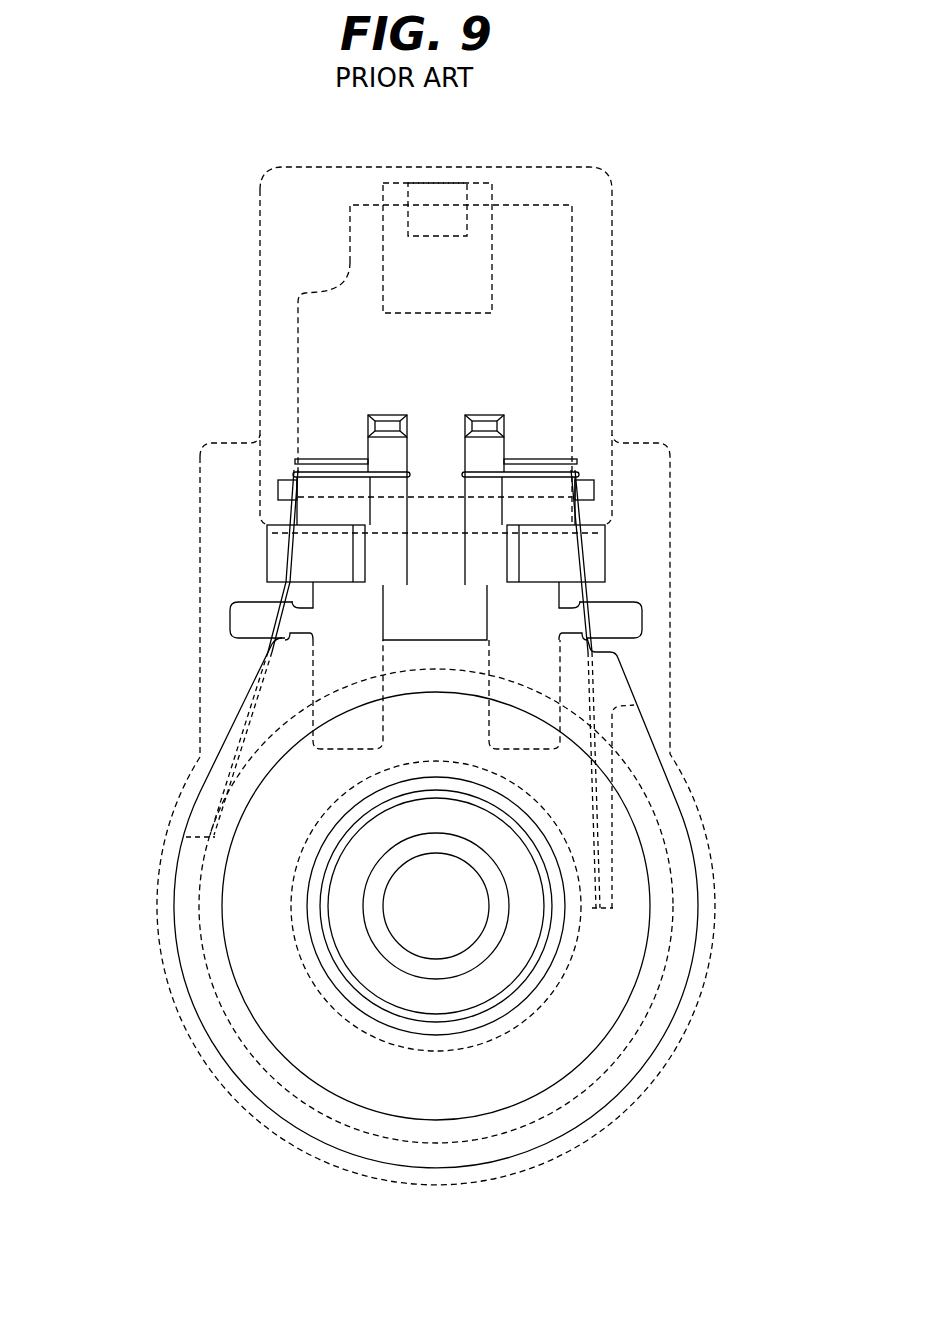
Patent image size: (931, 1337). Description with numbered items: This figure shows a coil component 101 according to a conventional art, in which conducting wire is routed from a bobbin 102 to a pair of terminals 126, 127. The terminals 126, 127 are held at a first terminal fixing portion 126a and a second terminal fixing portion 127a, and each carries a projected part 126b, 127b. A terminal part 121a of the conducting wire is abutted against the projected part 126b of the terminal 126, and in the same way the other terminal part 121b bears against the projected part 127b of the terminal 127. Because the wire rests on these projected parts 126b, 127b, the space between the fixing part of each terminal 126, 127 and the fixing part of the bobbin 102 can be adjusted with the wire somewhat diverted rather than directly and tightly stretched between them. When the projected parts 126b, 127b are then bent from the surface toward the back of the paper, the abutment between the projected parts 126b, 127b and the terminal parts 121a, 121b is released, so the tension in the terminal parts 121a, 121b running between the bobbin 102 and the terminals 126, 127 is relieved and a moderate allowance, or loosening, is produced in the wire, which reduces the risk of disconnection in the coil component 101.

The coil component 101 is at (177, 405).
The bobbin 102 is at (587, 1121).
The terminal 126 is at (480, 413).
The terminal 127 is at (387, 413).
The first terminal fixing portion 126a is at (600, 555).
The second terminal fixing portion 127a is at (275, 550).
The terminal part 121a is at (592, 597).
The terminal part 121b is at (288, 597).
The projected part 126b is at (640, 622).
The projected part 127b is at (232, 620).